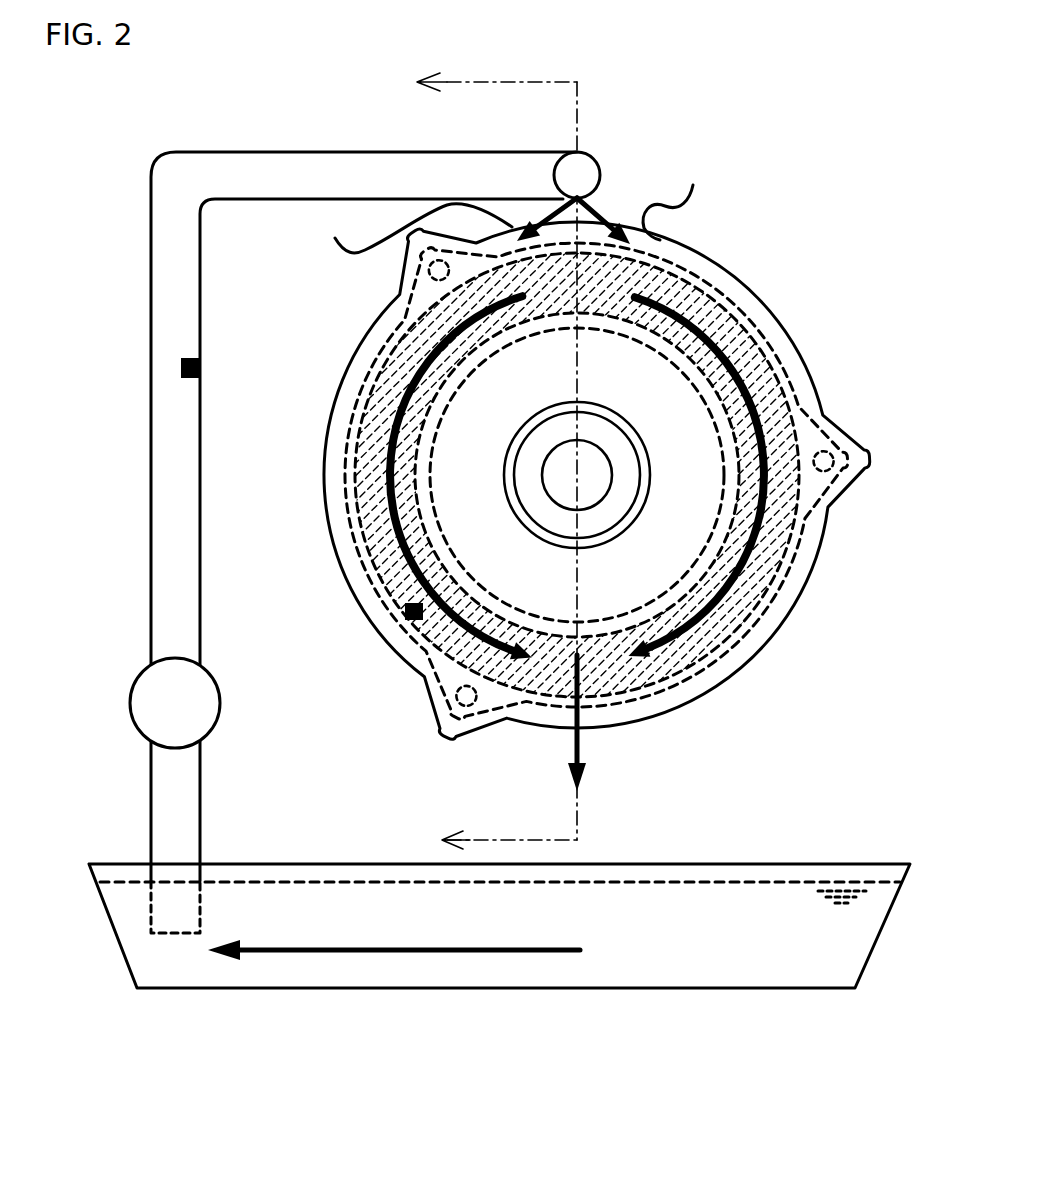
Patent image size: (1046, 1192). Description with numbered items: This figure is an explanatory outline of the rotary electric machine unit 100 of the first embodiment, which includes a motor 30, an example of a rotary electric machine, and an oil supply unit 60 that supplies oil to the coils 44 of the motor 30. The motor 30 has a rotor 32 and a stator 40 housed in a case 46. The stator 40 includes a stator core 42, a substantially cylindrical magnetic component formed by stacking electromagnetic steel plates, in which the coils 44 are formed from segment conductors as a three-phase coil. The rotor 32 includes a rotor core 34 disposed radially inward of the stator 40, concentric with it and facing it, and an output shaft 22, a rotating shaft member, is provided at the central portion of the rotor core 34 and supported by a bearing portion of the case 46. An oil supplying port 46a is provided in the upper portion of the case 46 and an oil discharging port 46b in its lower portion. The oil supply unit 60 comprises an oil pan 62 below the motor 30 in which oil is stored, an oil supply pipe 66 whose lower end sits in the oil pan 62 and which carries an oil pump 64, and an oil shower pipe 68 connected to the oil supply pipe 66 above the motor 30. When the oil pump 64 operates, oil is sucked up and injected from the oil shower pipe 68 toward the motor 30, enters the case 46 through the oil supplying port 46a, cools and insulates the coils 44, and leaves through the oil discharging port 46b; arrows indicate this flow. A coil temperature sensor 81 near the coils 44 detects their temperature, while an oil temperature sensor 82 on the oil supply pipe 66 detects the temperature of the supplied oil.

The output shaft 22 is at (503, 480).
The motor 30 is at (829, 645).
The rotor 32 is at (735, 443).
The rotor core 34 is at (690, 503).
The stator 40 is at (791, 354).
The stator core 42 is at (793, 380).
The coils 44 is at (716, 307).
The case 46 is at (340, 369).
The oil supplying port 46a is at (500, 203).
The oil discharging port 46b is at (587, 733).
The oil supply unit 60 is at (123, 1047).
The oil pan 62 is at (868, 960).
The oil pump 64 is at (220, 702).
The oil supply pipe 66 is at (200, 800).
The oil shower pipe 68 is at (594, 162).
The coil temperature sensor 81 is at (405, 612).
The oil temperature sensor 82 is at (200, 368).
The rotary electric machine unit 100 is at (723, 1093).